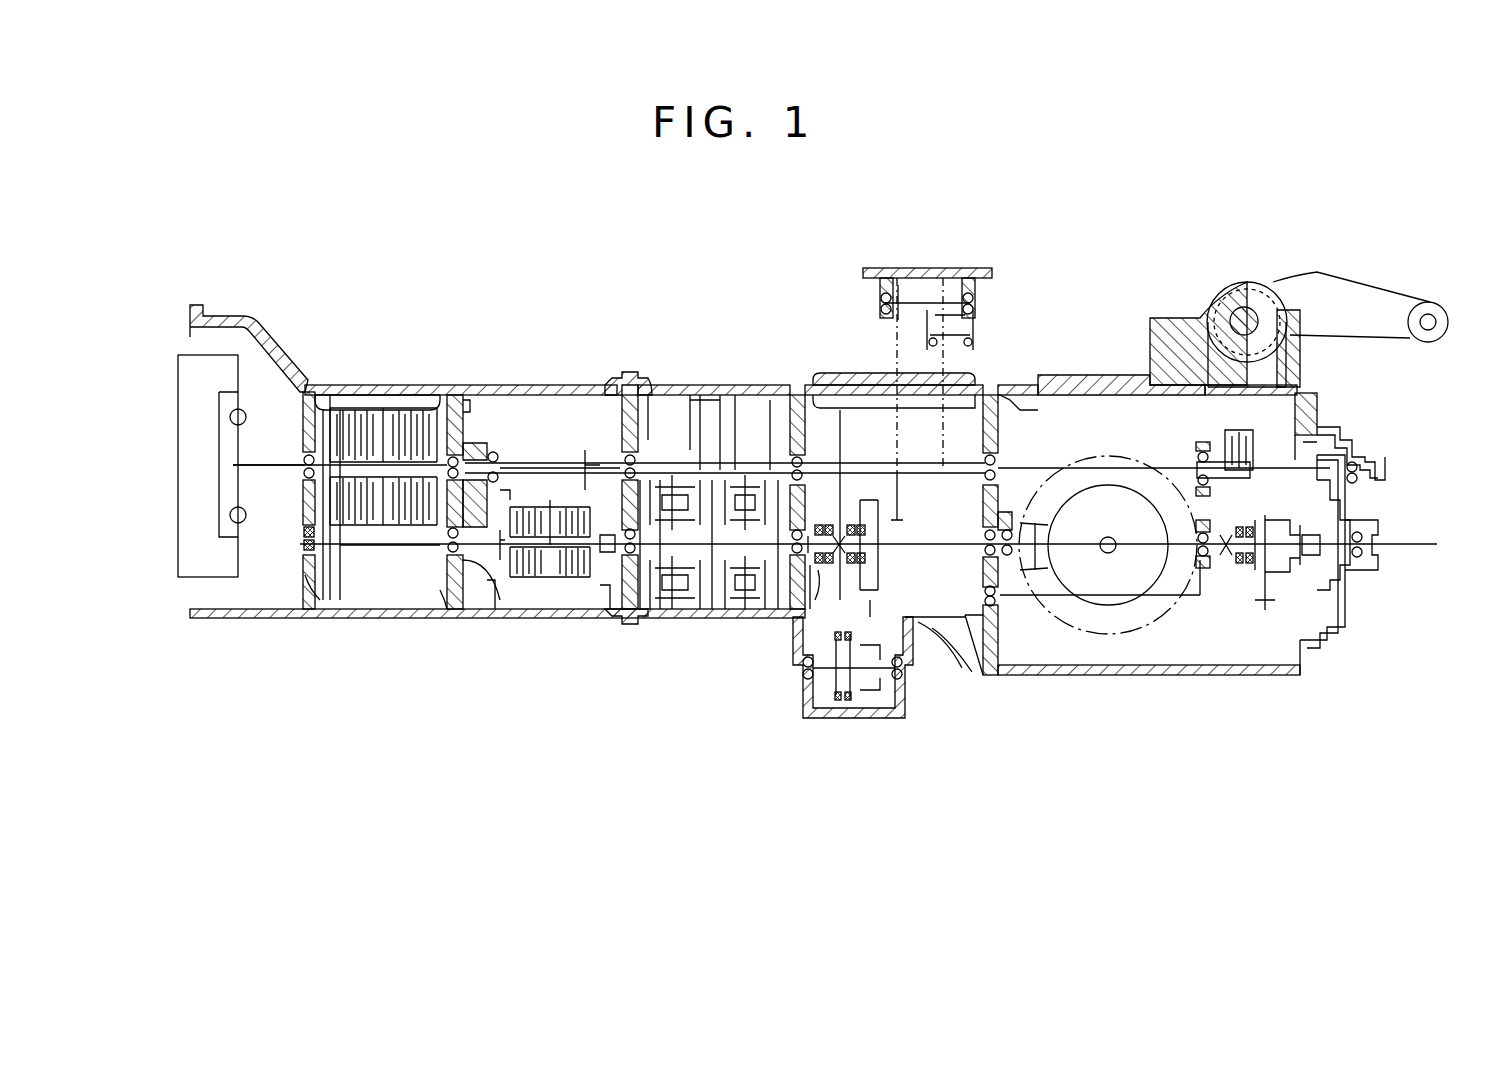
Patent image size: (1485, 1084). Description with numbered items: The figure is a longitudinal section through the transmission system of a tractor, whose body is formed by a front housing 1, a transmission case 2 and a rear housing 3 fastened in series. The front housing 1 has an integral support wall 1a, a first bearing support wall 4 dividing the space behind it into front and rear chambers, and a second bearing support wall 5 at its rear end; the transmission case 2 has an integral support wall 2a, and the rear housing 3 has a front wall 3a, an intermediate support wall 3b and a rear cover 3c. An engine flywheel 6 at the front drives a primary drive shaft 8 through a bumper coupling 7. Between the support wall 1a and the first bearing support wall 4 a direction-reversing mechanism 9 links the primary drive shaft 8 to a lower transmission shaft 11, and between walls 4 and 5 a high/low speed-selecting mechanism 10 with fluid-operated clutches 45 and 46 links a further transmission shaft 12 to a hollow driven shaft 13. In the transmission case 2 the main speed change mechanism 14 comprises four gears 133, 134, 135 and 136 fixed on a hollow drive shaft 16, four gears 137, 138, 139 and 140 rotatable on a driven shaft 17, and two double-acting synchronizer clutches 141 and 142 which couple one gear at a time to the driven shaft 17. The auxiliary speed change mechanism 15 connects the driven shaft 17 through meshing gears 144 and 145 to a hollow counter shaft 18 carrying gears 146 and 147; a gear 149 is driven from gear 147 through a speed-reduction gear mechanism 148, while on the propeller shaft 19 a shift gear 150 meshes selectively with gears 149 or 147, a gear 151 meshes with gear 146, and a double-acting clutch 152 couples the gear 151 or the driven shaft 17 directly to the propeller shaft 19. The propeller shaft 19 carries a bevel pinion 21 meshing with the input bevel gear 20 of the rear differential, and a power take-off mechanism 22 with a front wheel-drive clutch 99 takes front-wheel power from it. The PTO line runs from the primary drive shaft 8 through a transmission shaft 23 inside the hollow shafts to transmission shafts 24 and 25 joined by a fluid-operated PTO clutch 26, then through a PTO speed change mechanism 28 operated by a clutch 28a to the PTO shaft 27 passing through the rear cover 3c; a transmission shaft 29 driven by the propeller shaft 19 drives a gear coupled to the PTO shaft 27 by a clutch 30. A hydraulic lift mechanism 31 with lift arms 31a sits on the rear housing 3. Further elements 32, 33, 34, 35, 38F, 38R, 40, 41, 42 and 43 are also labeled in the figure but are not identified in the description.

The front housing 1 is at (437, 430).
The support wall 1a is at (303, 412).
The transmission case 2 is at (766, 385).
The support wall 2a is at (782, 609).
The rear housing 3 is at (1165, 676).
The front wall 3a is at (1005, 410).
The support wall 3b is at (1196, 522).
The rear cover 3c is at (1350, 605).
The first bearing support wall 4 is at (468, 440).
The second bearing support wall 5 is at (652, 392).
The engine flywheel 6 is at (208, 368).
The bumper coupling 7 is at (245, 575).
The primary drive shaft 8 is at (277, 488).
The direction-reversing mechanism 9 is at (390, 390).
The high/low speed-selecting mechanism 10 is at (580, 605).
The transmission shaft 11 is at (368, 548).
The transmission shaft 12 is at (458, 590).
The hollow driven shaft 13 is at (535, 485).
The main speed change mechanism 14 is at (718, 395).
The auxiliary speed change mechanism 15 is at (898, 280).
The hollow drive shaft 16 is at (752, 460).
The driven shaft 17 is at (712, 609).
The hollow counter shaft 18 is at (992, 392).
The propeller shaft 19 is at (925, 625).
The input bevel gear 20 is at (1108, 606).
The bevel pinion 21 is at (1040, 600).
The power take-off mechanism 22 is at (886, 704).
The transmission shaft 23 is at (842, 458).
The transmission shaft 24 is at (1048, 482).
The transmission shaft 25 is at (1328, 432).
The fluid-operated PTO clutch 26 is at (1250, 420).
The PTO shaft 27 is at (1400, 548).
The PTO speed change mechanism 28 is at (1358, 524).
The clutch 28a is at (1312, 570).
The transmission shaft 29 is at (1208, 605).
The clutch 30 is at (1243, 590).
The hydraulic lift mechanism 31 is at (1180, 306).
The lift arms 31a is at (1365, 295).
The clutch plate 32 is at (323, 440).
The bearing wall 33 is at (455, 392).
The clutch cylinder 34 is at (320, 590).
The clutch piston 35 is at (445, 609).
The forward clutch 38F is at (352, 397).
The reverse clutch 38R is at (408, 525).
The gear 40 is at (600, 609).
The gear 41 is at (495, 609).
The shaft sleeve 42 is at (600, 460).
The drive shaft 43 is at (513, 465).
The fluid-operated clutch 45 is at (566, 493).
The fluid-operated clutch 46 is at (575, 580).
The front wheel-drive clutch 99 is at (845, 700).
The gear 133 is at (700, 445).
The gear 134 is at (670, 445).
The gear 135 is at (816, 385).
The gear 136 is at (732, 440).
The gear 137 is at (690, 609).
The gear 138 is at (660, 609).
The gear 139 is at (760, 609).
The gear 140 is at (775, 609).
The double-acting synchronizer clutch 141 is at (648, 609).
The double-acting synchronizer clutch 142 is at (772, 460).
The gear 144 is at (824, 587).
The gear 145 is at (843, 402).
The gear 146 is at (874, 402).
The gear 147 is at (898, 455).
The speed-reduction gear mechanism 148 is at (1014, 280).
The gear 149 is at (945, 410).
The shift gear 150 is at (975, 610).
The gear 151 is at (875, 520).
The double-acting clutch 152 is at (838, 512).